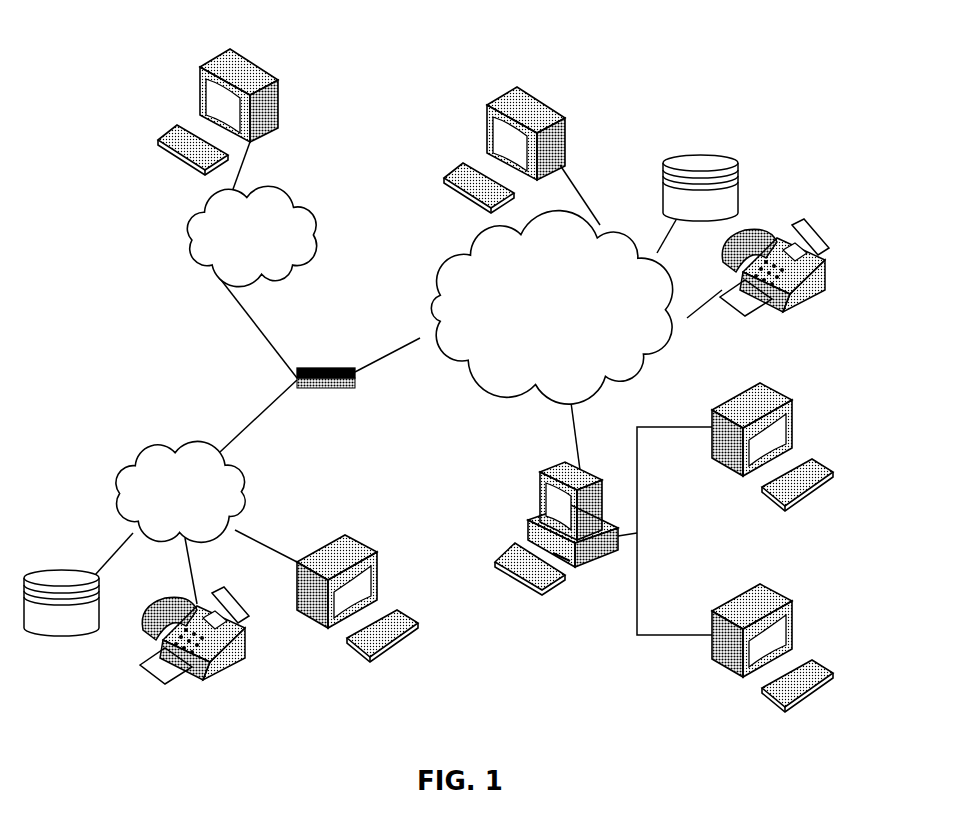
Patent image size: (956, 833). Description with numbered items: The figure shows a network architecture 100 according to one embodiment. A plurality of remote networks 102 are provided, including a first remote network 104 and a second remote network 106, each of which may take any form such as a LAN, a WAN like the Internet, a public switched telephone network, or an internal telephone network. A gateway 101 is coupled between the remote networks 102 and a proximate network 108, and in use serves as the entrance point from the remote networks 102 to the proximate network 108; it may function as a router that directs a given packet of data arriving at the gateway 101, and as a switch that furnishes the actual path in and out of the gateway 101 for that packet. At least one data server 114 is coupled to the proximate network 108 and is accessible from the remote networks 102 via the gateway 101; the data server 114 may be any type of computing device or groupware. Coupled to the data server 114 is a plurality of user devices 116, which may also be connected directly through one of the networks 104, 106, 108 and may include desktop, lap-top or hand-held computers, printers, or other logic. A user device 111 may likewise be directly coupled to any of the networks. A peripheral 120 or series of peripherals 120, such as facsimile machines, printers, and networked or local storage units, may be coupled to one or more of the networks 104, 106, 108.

The architecture 100 is at (135, 34).
The gateway 101 is at (318, 367).
The remote networks 102 is at (155, 300).
The first remote network 104 is at (112, 468).
The second remote network 106 is at (318, 212).
The proximate network 108 is at (648, 372).
The user device 111 is at (565, 118).
The data server 114 is at (540, 489).
The user devices 116 is at (279, 86).
The peripheral 120 is at (738, 164).